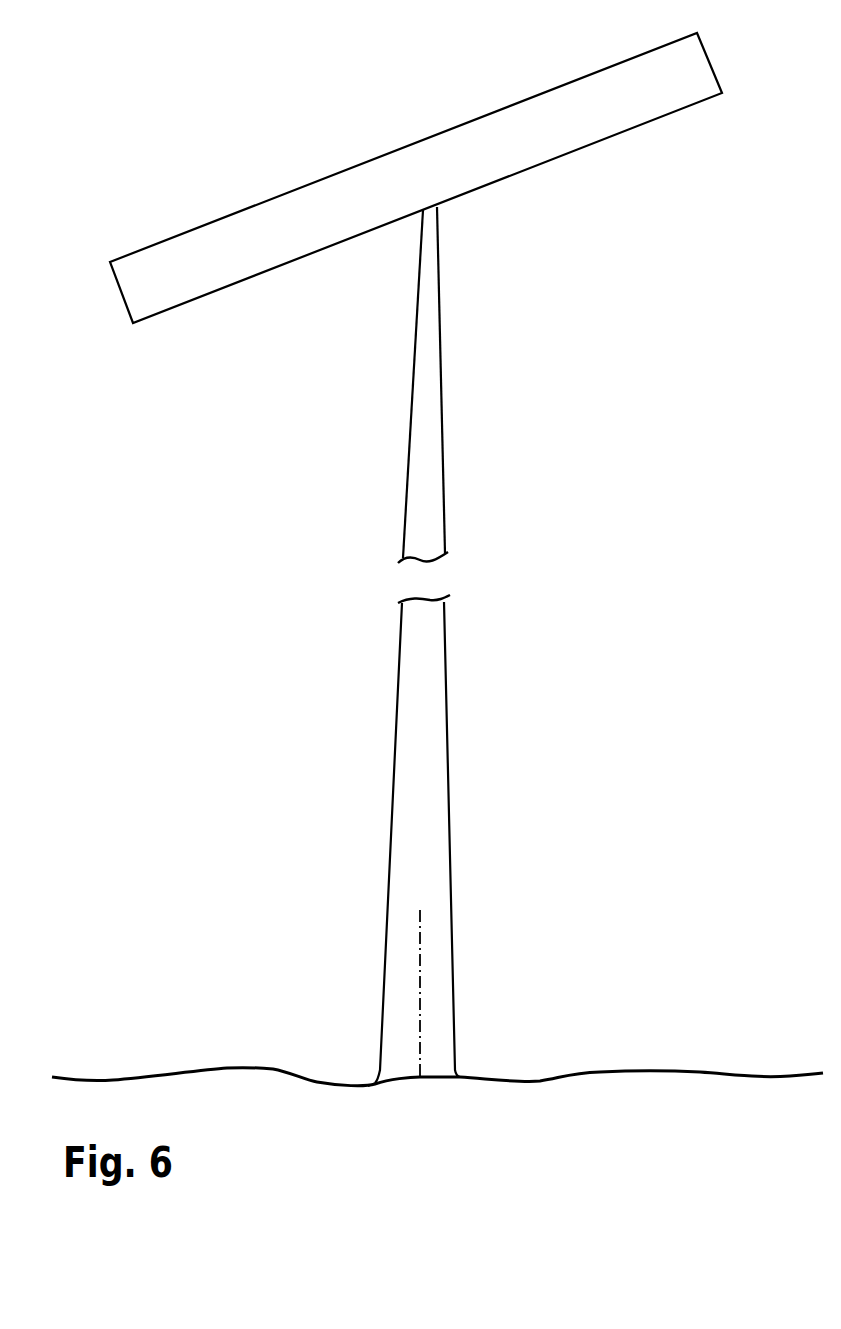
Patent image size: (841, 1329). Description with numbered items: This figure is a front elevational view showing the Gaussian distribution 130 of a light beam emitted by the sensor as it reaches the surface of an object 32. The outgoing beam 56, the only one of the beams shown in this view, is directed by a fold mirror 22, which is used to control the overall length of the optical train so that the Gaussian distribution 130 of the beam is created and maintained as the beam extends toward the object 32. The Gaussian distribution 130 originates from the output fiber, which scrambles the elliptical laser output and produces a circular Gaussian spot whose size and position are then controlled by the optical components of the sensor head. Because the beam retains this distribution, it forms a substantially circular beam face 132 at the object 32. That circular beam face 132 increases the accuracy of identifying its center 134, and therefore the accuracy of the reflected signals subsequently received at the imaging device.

The fold mirror 22 is at (662, 106).
The outgoing beam 56 is at (430, 248).
The Gaussian distribution 130 is at (448, 782).
The center 134 is at (420, 990).
The object 32 is at (182, 1068).
The beam face 132 is at (377, 1085).